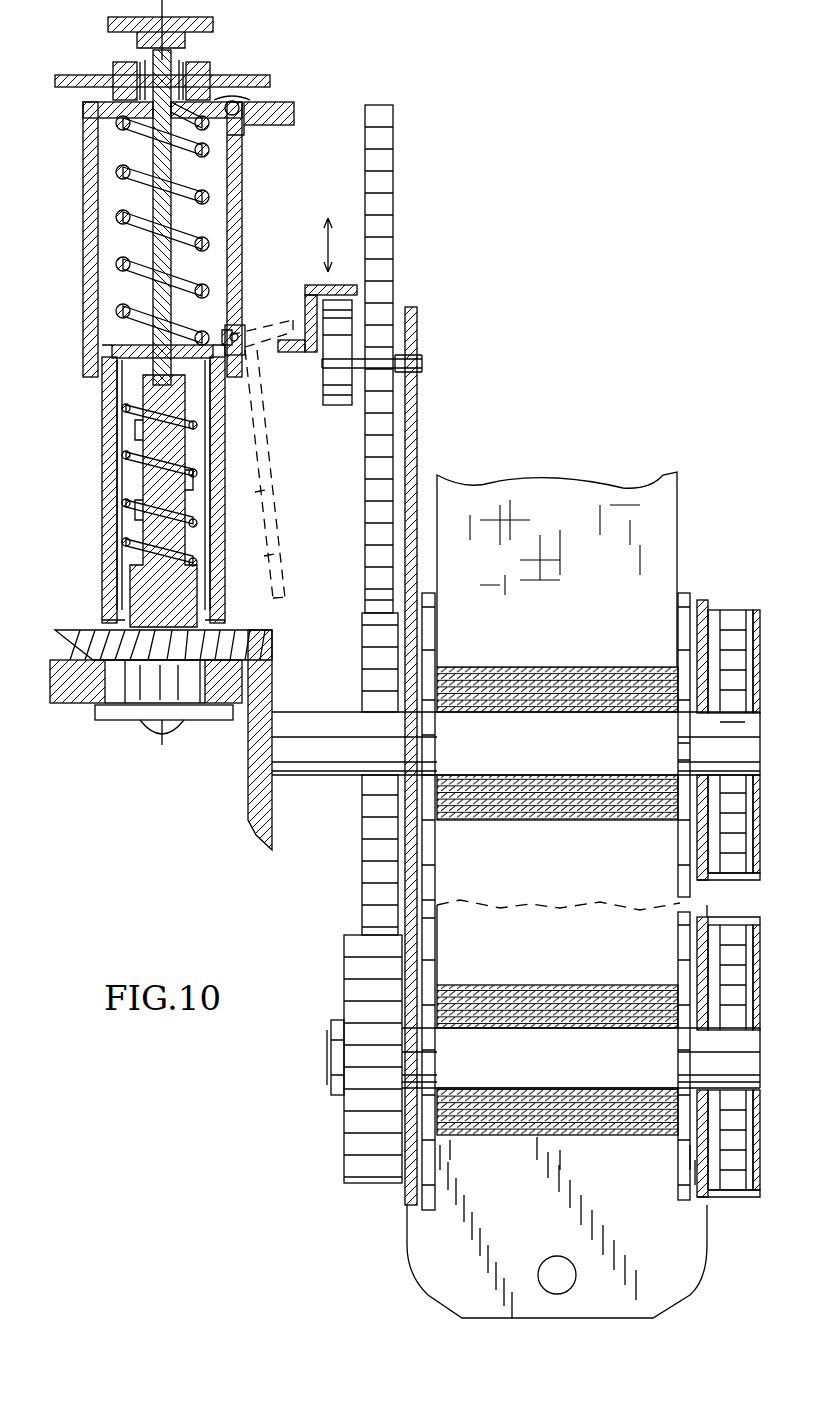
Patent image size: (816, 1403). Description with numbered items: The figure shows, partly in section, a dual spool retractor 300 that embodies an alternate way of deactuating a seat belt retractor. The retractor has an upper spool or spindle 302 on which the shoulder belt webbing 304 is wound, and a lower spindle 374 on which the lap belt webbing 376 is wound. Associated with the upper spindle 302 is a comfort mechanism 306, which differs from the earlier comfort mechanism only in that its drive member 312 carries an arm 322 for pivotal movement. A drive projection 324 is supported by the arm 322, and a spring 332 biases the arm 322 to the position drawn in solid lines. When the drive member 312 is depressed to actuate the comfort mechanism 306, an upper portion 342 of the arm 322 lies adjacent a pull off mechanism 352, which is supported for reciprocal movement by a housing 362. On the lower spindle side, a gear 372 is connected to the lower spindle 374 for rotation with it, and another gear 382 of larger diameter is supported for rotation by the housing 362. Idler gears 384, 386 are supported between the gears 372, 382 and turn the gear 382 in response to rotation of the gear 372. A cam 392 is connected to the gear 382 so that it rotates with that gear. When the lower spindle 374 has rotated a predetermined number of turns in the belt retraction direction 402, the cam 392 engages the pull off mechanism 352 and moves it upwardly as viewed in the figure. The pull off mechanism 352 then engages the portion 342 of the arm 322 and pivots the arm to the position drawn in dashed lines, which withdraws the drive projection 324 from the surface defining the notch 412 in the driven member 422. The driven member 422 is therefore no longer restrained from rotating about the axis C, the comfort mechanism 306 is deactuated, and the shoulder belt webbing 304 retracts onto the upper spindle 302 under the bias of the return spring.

The dual spool retractor 300 is at (624, 297).
The upper spool or spindle 302 is at (572, 725).
The shoulder belt webbing 304 is at (540, 500).
The comfort mechanism 306 is at (74, 415).
The drive member 312 is at (79, 208).
The arm 322 is at (232, 185).
The drive projection 324 is at (236, 328).
The spring 332 is at (245, 100).
The upper portion of the arm 342 is at (285, 112).
The pull off mechanism 352 is at (296, 357).
The housing 362 is at (412, 325).
The gear 372 is at (375, 1095).
The lower spindle 374 is at (560, 1050).
The lap belt webbing 376 is at (555, 932).
The gear 382 is at (385, 170).
The idler gear 384 is at (380, 855).
The idler gear 386 is at (373, 677).
The cam 392 is at (336, 405).
The belt retraction direction 402 is at (512, 920).
The notch 412 is at (222, 560).
The driven member 422 is at (99, 464).